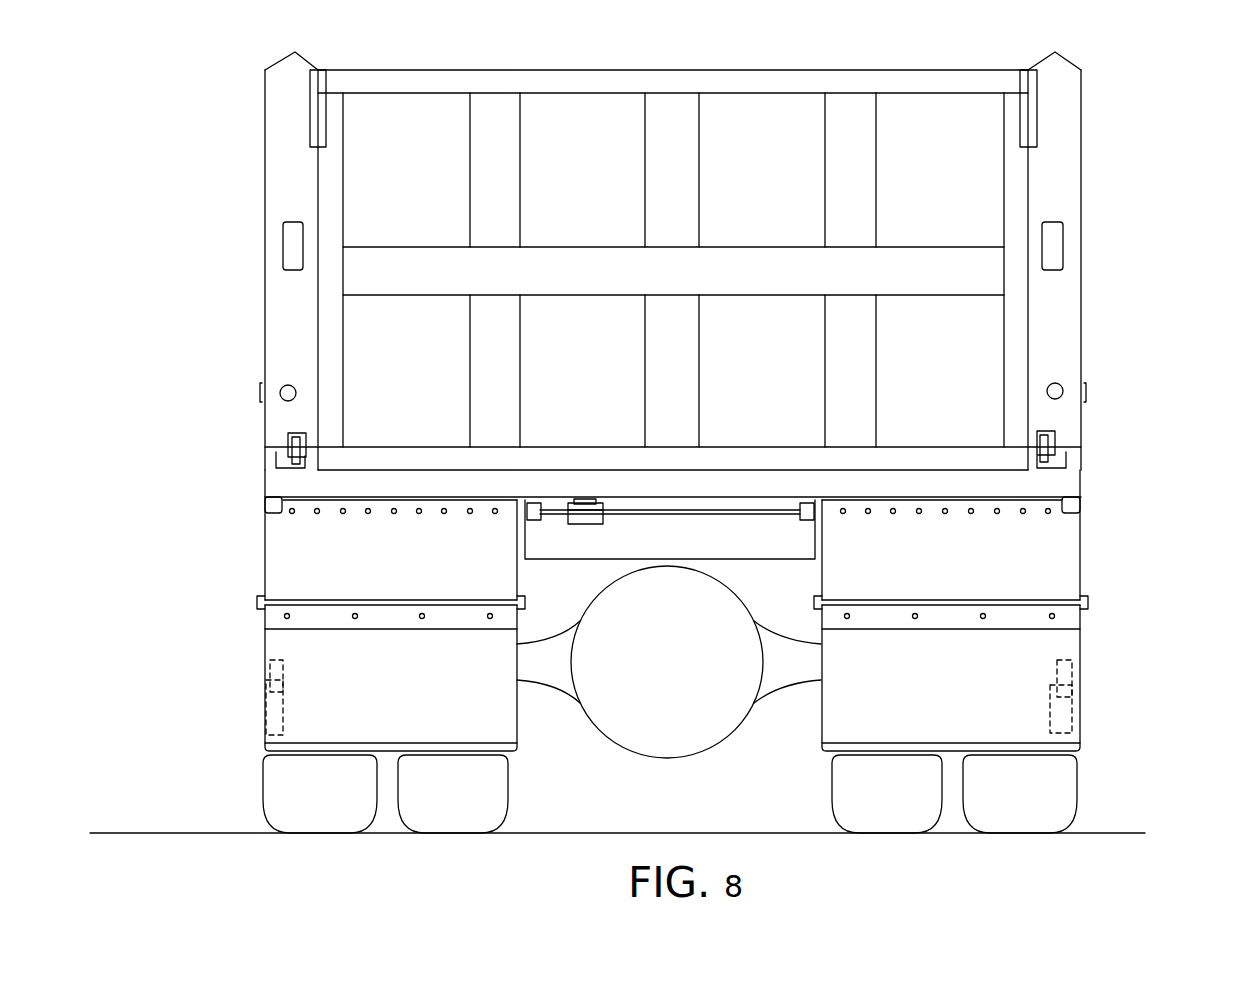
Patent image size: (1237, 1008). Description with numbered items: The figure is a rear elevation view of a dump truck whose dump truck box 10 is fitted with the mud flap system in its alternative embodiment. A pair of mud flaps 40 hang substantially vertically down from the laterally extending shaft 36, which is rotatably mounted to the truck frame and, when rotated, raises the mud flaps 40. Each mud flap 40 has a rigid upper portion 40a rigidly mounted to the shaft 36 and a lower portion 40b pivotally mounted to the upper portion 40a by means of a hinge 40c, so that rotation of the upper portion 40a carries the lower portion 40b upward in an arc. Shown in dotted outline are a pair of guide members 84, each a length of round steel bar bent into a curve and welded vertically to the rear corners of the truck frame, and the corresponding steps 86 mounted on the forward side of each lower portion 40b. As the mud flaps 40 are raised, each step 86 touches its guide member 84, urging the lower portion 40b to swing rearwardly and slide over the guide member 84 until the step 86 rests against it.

The dump truck box 10 is at (1128, 248).
The laterally extending shaft 36 is at (681, 513).
The mud flap 40 is at (677, 610).
The upper portion of mud flap 40a is at (265, 553).
The lower portion of mud flap 40b is at (262, 692).
The hinge 40c is at (258, 602).
The guide member 84 is at (272, 663).
The step 86 is at (265, 713).